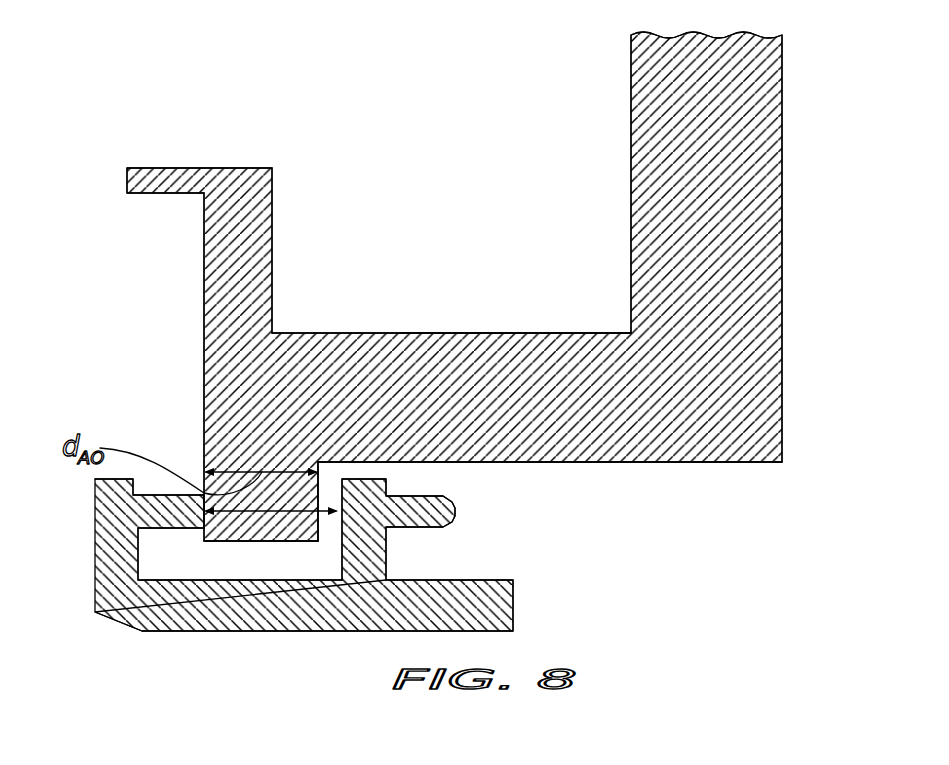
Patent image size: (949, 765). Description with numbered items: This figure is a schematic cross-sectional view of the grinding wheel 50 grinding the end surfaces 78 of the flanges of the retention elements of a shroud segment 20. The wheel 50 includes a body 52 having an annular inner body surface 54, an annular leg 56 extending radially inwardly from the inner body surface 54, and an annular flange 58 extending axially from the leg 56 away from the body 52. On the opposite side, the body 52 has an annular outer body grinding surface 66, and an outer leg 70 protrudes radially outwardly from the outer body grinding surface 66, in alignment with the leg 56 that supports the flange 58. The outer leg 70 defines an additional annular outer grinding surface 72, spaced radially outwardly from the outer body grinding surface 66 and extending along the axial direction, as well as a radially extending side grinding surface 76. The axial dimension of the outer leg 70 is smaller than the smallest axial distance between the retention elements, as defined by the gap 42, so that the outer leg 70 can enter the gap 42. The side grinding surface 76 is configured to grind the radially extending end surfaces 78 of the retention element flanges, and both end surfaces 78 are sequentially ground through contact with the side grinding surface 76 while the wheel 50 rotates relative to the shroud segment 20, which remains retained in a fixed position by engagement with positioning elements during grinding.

The shroud segment 20 is at (522, 604).
The gap 42 is at (277, 515).
The grinding wheel 50 is at (790, 158).
The body 52 is at (452, 349).
The annular inner body surface 54 is at (524, 333).
The annular leg 56 is at (263, 247).
The annular flange 58 is at (154, 165).
The outer body grinding surface 66 is at (742, 462).
The outer leg 70 is at (222, 449).
The additional annular outer grinding surface 72 is at (232, 542).
The side grinding surface 76 is at (204, 390).
The end surfaces 78 is at (455, 511).